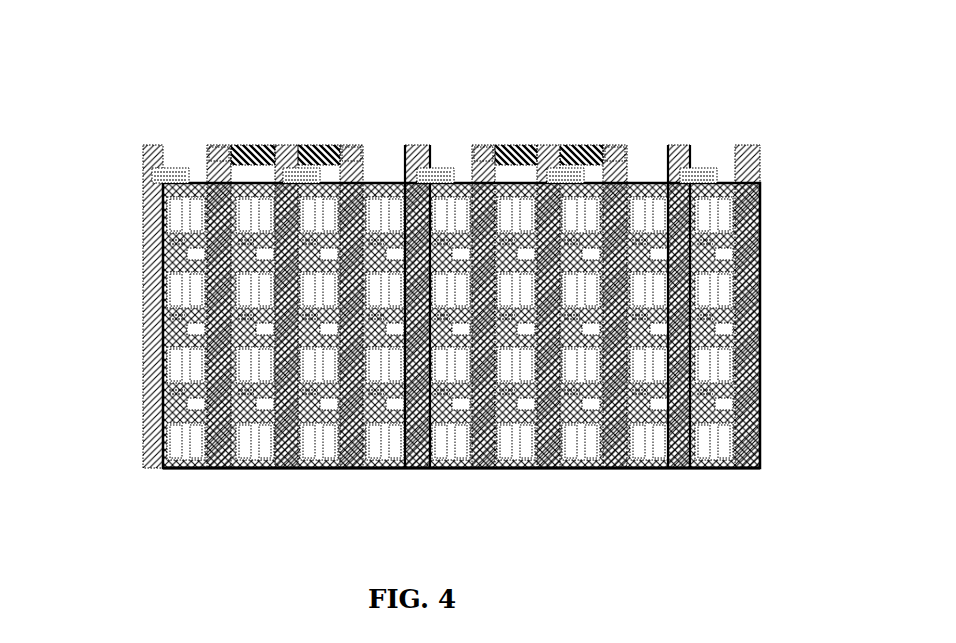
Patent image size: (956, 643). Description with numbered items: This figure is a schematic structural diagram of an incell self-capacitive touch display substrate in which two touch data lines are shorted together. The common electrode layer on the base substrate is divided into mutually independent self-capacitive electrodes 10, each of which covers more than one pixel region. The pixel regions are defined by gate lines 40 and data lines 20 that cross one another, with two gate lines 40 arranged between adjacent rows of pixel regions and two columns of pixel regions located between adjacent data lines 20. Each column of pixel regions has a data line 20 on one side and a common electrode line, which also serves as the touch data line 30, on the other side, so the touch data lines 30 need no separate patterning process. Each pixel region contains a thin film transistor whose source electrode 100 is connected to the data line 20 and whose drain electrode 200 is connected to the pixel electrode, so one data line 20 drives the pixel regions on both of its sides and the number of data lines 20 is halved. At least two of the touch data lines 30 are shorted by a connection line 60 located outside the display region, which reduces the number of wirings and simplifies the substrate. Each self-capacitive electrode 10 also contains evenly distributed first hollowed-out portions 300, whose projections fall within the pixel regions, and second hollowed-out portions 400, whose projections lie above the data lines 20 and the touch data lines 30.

The self-capacitive electrode 10 is at (250, 472).
The data line 20 is at (163, 152).
The touch data line 30 is at (227, 157).
The gate line 40 is at (167, 392).
The connection line 60 is at (263, 137).
The source electrode 100 is at (150, 280).
The drain electrode 200 is at (150, 203).
The first hollowed-out portion 300 is at (740, 213).
The second hollowed-out portion 400 is at (758, 287).